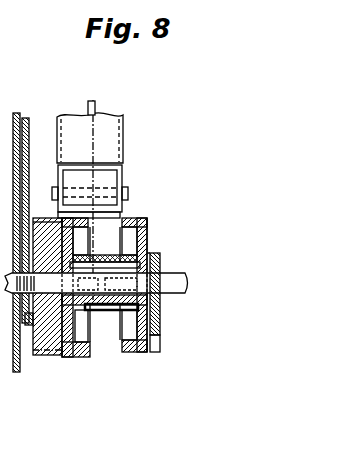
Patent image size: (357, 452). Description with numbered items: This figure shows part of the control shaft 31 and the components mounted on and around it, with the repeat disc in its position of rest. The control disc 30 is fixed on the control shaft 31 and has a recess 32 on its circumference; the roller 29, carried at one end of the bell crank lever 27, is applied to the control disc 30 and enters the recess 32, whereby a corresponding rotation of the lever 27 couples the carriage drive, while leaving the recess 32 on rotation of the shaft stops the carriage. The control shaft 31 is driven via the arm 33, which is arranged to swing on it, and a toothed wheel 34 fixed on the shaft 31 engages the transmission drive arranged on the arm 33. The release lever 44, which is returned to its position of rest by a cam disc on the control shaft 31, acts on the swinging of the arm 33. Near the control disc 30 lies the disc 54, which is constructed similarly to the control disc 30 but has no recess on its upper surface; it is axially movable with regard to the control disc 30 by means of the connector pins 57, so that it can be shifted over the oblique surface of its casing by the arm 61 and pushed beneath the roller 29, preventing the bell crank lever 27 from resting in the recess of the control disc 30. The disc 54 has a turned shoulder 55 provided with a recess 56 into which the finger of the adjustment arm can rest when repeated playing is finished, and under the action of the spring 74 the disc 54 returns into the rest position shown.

The arm 33 is at (27, 118).
The toothed wheel 34 is at (38, 353).
The control disc 30 is at (72, 358).
The turned shoulder 55 is at (128, 353).
The connector pins 57 is at (135, 258).
The spring 74 is at (99, 300).
The control shaft 31 is at (176, 285).
The recess 56 is at (134, 282).
The arm 61 is at (152, 322).
The disc 54 is at (142, 350).
The bell crank lever 27 is at (112, 140).
The release lever 44 is at (94, 105).
The roller 29 is at (105, 177).
The recess 32 is at (122, 211).